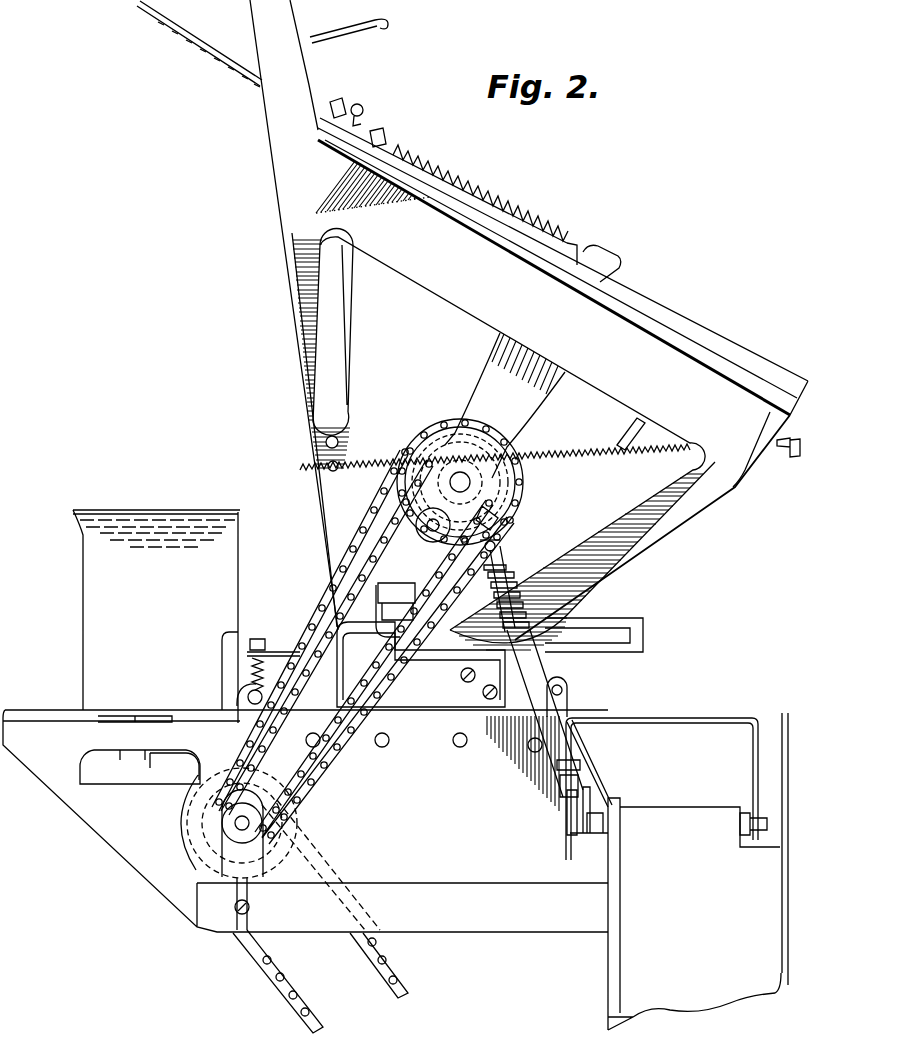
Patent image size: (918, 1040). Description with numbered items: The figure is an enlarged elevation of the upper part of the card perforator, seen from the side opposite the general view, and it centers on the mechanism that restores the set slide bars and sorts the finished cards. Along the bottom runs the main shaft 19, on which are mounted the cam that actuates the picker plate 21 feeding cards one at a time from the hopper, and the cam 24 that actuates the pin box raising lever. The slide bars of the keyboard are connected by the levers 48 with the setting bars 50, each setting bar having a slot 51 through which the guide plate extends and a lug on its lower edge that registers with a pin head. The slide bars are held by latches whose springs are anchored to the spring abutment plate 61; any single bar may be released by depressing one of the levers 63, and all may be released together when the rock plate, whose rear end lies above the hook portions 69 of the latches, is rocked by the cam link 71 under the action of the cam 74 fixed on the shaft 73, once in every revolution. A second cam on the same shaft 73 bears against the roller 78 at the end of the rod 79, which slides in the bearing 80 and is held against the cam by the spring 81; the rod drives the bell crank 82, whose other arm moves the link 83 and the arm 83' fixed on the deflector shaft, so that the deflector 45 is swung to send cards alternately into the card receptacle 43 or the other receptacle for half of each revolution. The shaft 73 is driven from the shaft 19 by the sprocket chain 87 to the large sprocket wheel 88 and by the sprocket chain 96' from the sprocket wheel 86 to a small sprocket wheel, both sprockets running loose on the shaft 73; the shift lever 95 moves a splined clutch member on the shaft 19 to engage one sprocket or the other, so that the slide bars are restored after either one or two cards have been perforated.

The shaft 19 is at (250, 828).
The picker plate 21 is at (155, 697).
The cam 24 is at (205, 832).
The card receptacle 43 is at (694, 914).
The deflector 45 is at (725, 720).
The lever 48 is at (355, 280).
The setting bar 50 is at (610, 622).
The slot 51 is at (622, 634).
The spring abutment plate 61 is at (633, 434).
The lever 63 is at (792, 457).
The hook portion 69 is at (495, 512).
The cam link 71 is at (523, 430).
The shaft 73 is at (440, 455).
The cam 74 is at (447, 440).
The roller 78 is at (497, 545).
The rod 79 is at (588, 697).
The bearing 80 is at (540, 665).
The spring 81 is at (505, 568).
The bell crank 82 is at (563, 782).
The link 83 is at (585, 820).
The arm 83' is at (612, 763).
The sprocket wheel 86 is at (262, 795).
The sprocket chain 87 is at (322, 600).
The large sprocket wheel 88 is at (426, 536).
The shift lever 95 is at (252, 905).
The sprocket chain 96' is at (384, 672).